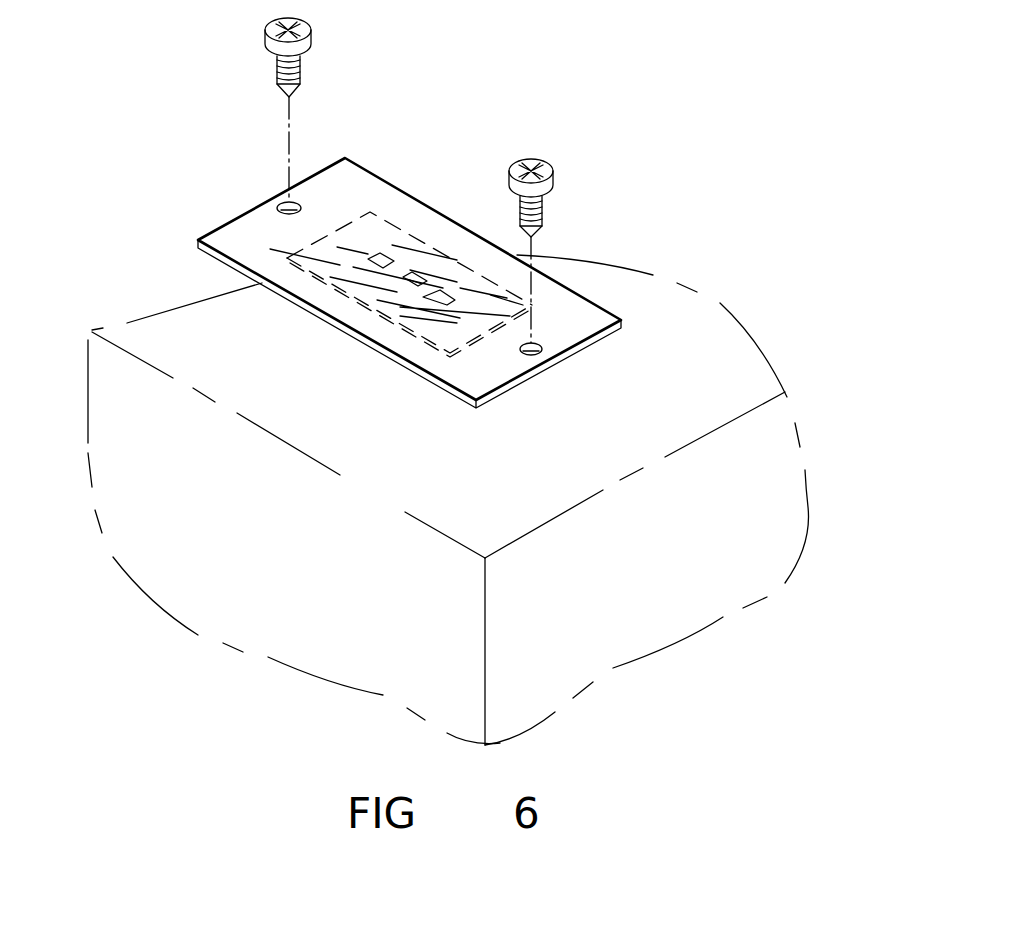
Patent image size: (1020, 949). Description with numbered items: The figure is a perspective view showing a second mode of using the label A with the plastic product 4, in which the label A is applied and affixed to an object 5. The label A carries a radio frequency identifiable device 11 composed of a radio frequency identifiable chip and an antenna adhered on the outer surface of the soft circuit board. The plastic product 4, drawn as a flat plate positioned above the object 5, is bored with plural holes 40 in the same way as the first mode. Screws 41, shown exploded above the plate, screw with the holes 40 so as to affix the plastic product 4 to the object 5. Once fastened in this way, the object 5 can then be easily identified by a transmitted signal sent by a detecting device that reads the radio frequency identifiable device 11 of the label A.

The plastic product 4 is at (357, 340).
The object 5 is at (235, 645).
The radio frequency identifiable device (RFID) 11 is at (378, 257).
The holes 40 is at (283, 204).
The screws 41 is at (263, 32).
The label A is at (408, 233).